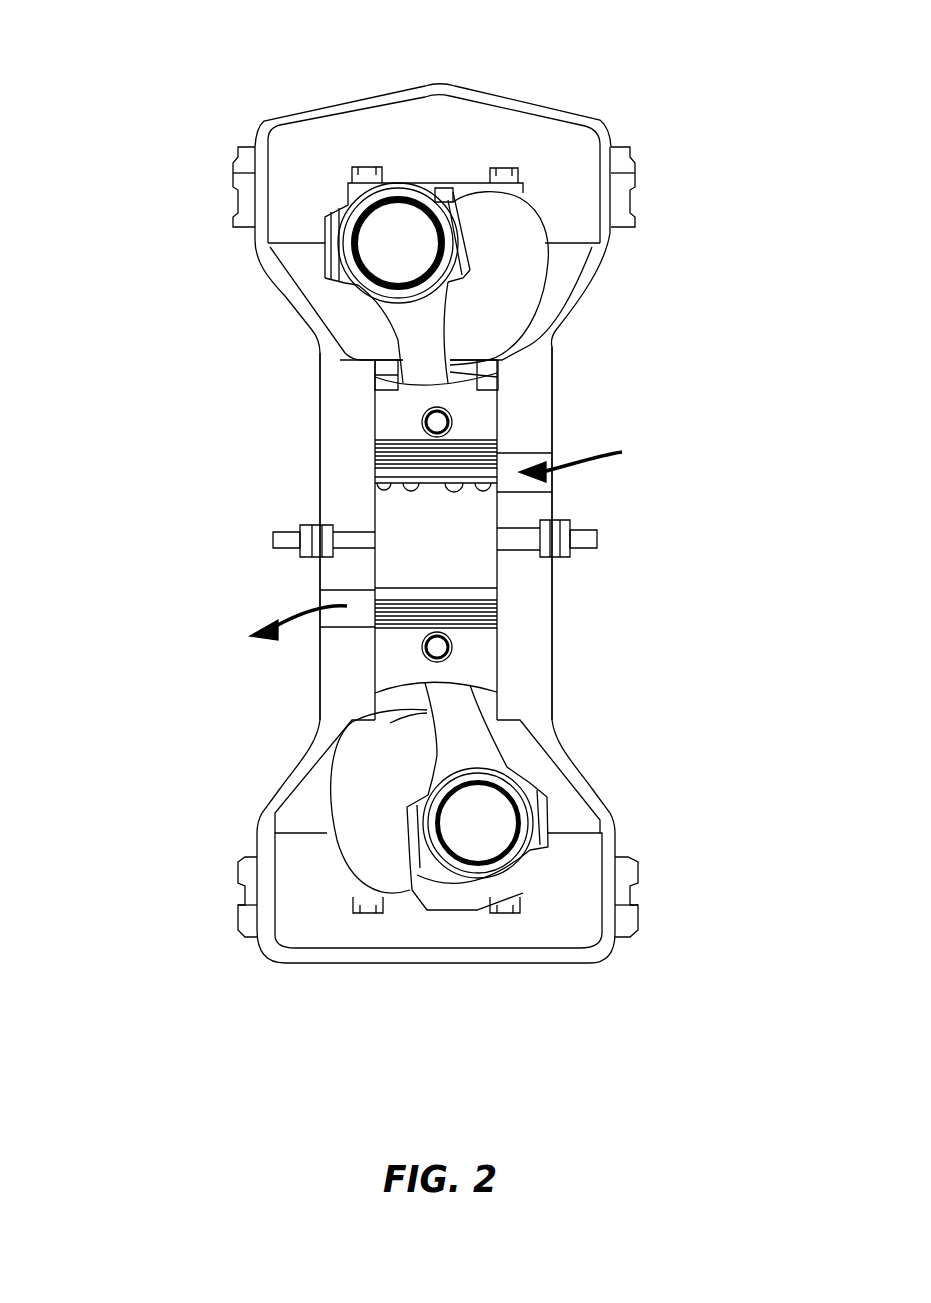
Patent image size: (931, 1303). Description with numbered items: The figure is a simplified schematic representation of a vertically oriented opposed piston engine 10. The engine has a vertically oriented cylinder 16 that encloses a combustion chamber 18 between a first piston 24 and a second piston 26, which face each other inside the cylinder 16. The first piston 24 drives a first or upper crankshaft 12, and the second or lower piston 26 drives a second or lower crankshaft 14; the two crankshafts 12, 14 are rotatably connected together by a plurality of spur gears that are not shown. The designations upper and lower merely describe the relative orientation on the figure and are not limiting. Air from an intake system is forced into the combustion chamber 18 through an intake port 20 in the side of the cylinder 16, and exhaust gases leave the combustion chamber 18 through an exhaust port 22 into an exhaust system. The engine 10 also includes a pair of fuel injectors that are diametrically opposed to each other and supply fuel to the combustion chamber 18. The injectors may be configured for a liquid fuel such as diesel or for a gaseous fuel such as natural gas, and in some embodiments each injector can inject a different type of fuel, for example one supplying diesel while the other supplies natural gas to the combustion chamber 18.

The opposed piston engine 10 is at (236, 74).
The upper crankshaft 12 is at (398, 232).
The lower crankshaft 14 is at (483, 815).
The cylinder 16 is at (533, 617).
The combustion chamber 18 is at (475, 570).
The intake port 20 is at (527, 450).
The exhaust port 22 is at (352, 633).
The first piston 24 is at (393, 410).
The second piston 26 is at (477, 657).